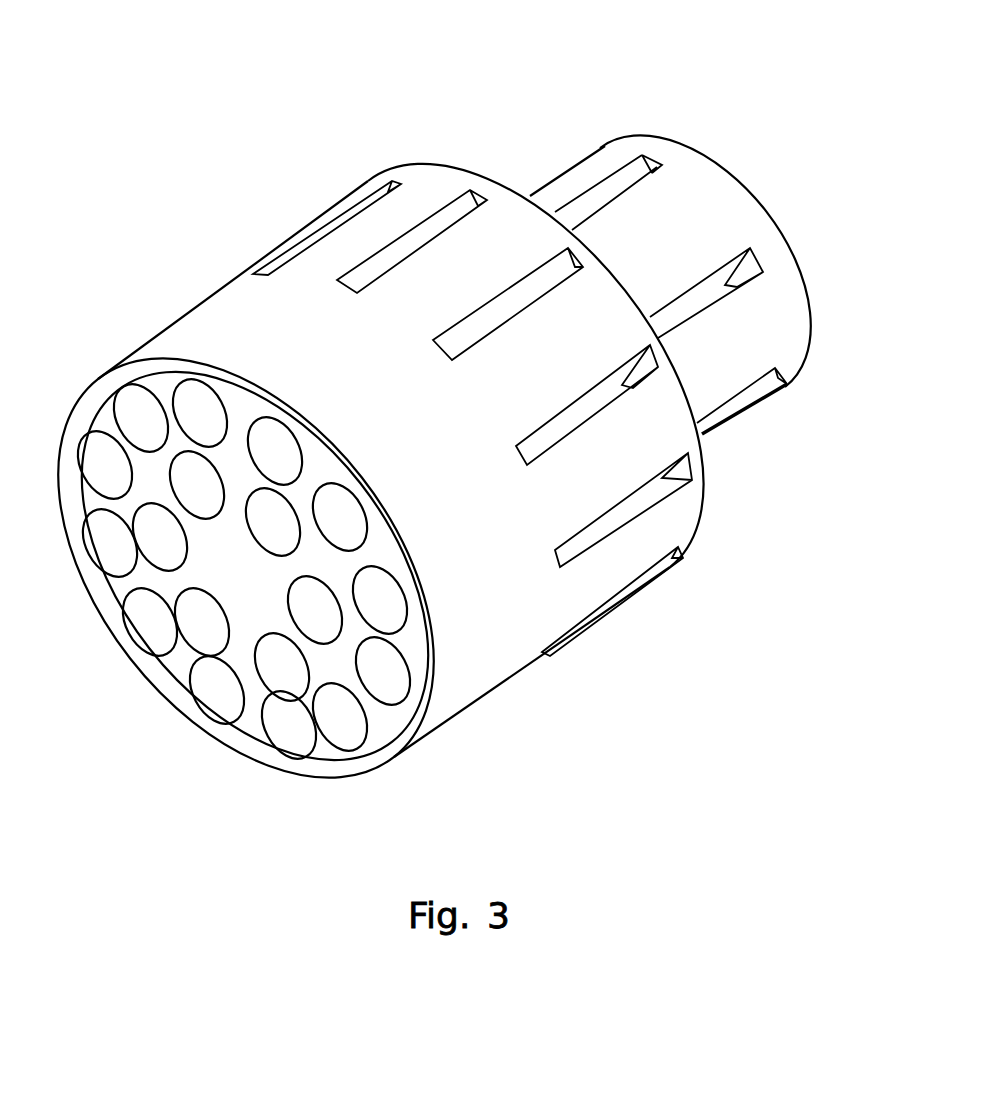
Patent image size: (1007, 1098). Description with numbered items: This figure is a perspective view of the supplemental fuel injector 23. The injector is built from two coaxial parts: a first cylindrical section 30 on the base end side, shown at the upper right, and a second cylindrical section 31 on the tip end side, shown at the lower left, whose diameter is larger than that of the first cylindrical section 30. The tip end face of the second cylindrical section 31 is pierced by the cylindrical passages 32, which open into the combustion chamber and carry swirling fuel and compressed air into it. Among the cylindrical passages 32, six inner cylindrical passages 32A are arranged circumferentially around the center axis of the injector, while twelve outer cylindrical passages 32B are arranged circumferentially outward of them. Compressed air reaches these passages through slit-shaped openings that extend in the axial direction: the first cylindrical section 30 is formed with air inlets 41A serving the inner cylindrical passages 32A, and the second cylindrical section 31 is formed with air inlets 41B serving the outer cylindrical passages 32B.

The supplemental fuel injector 23 is at (781, 75).
The first cylindrical section 30 is at (655, 138).
The second cylindrical section 31 is at (224, 298).
The cylindrical passages 32 is at (308, 840).
The inner cylindrical passages 32A is at (277, 670).
The outer cylindrical passages 32B is at (285, 728).
The air inlets 41A is at (583, 198).
The air inlets 41B is at (340, 222).